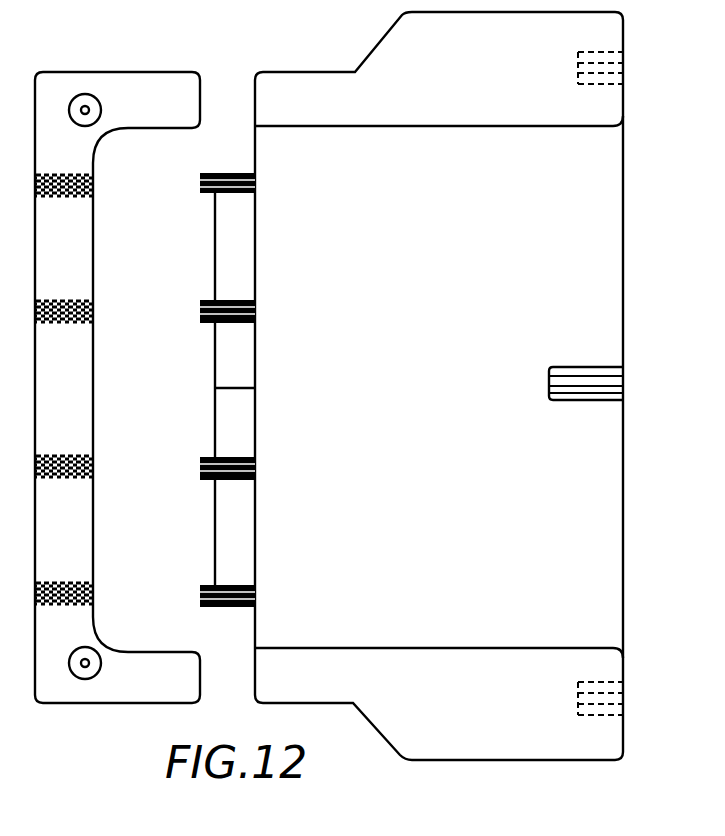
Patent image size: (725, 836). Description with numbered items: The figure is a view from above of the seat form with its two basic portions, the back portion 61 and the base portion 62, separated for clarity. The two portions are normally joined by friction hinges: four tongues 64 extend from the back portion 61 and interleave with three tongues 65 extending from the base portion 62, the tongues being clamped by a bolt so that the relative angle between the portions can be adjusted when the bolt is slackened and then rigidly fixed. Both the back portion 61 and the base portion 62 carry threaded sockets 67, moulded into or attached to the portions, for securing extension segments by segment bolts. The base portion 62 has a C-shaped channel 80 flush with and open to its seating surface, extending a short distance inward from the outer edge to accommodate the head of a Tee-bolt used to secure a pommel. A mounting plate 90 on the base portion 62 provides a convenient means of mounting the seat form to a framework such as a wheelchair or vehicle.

The back portion 61 is at (82, 395).
The base portion 62 is at (620, 507).
The tongues 64 is at (100, 588).
The tongues 65 is at (200, 592).
The threaded sockets 67 is at (86, 112).
The C-shaped channel 80 is at (625, 385).
The mounting plate 90 is at (223, 262).